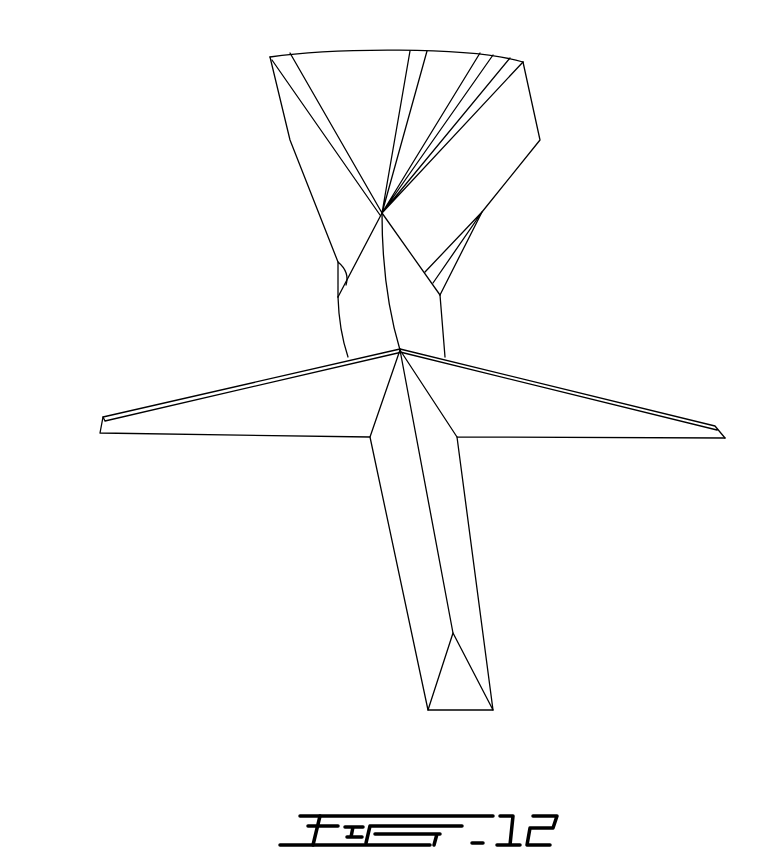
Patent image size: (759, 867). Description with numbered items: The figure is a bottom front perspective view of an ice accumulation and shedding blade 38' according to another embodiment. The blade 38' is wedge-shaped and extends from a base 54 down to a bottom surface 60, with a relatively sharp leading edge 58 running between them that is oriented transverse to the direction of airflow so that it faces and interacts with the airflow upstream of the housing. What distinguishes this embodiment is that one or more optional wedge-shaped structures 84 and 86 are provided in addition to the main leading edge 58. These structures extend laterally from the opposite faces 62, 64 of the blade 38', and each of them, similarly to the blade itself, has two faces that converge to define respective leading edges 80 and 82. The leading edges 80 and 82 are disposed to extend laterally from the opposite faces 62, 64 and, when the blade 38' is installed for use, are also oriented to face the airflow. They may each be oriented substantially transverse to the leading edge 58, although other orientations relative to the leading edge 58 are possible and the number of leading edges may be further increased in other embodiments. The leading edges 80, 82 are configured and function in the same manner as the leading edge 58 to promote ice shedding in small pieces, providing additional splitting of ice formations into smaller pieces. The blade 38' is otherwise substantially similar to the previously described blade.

The ice accumulation and shedding blade 38' is at (403, 414).
The base 54 is at (478, 183).
The leading edge 58 is at (393, 315).
The bottom surface 60 is at (455, 677).
The face 62 is at (457, 558).
The face 64 is at (408, 502).
The leading edge 80 is at (140, 410).
The leading edge 82 is at (628, 405).
The wedge-shaped structure 84 is at (222, 420).
The wedge-shaped structure 86 is at (555, 420).